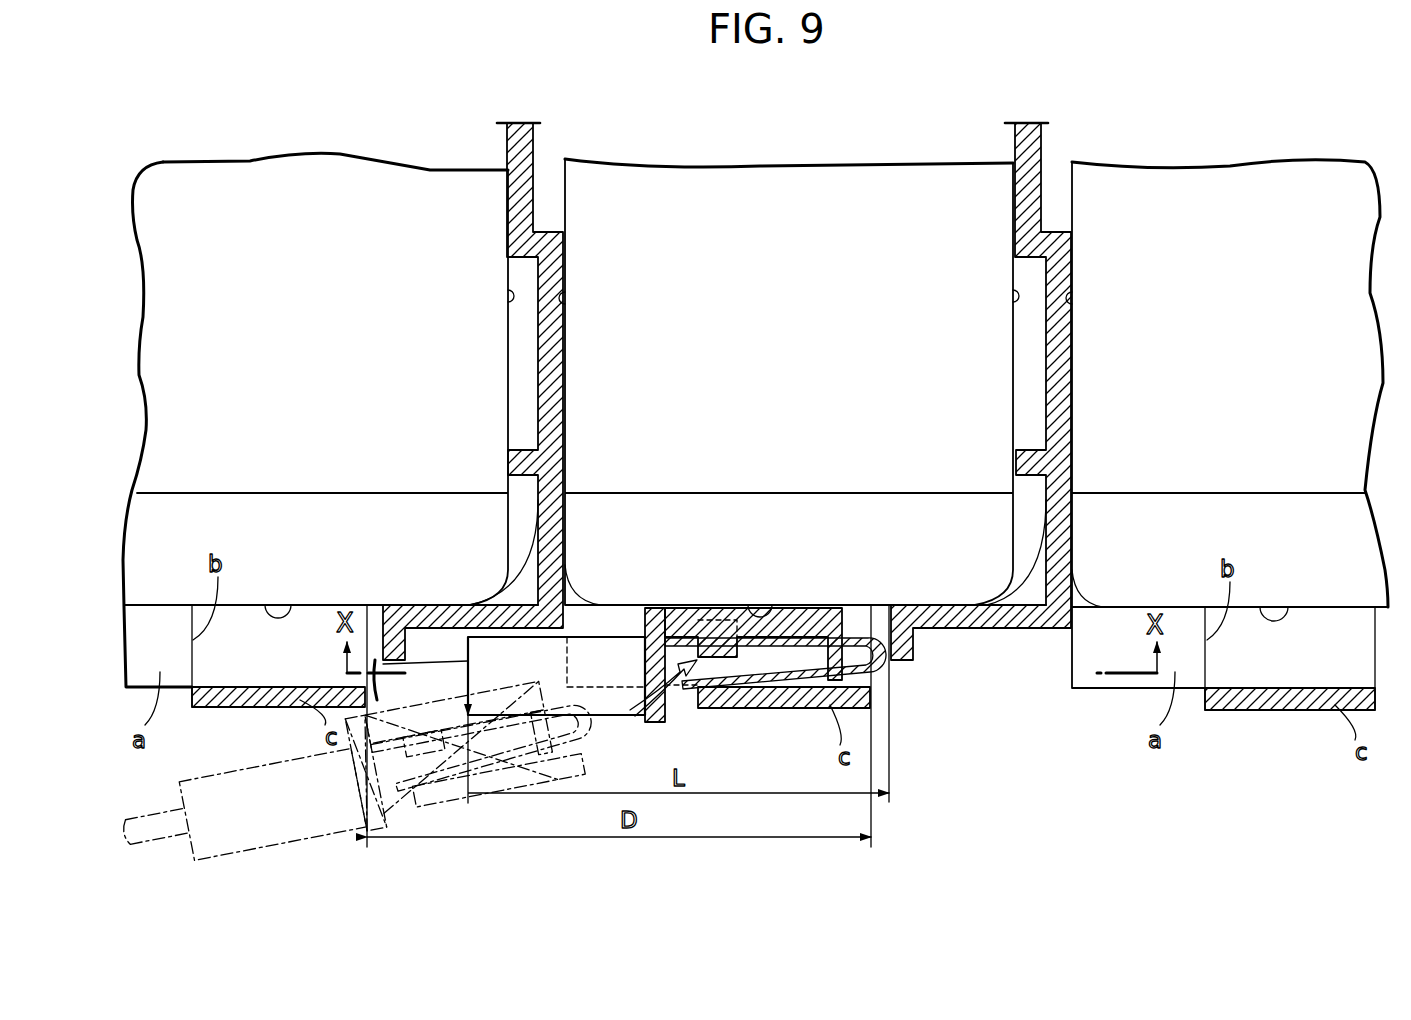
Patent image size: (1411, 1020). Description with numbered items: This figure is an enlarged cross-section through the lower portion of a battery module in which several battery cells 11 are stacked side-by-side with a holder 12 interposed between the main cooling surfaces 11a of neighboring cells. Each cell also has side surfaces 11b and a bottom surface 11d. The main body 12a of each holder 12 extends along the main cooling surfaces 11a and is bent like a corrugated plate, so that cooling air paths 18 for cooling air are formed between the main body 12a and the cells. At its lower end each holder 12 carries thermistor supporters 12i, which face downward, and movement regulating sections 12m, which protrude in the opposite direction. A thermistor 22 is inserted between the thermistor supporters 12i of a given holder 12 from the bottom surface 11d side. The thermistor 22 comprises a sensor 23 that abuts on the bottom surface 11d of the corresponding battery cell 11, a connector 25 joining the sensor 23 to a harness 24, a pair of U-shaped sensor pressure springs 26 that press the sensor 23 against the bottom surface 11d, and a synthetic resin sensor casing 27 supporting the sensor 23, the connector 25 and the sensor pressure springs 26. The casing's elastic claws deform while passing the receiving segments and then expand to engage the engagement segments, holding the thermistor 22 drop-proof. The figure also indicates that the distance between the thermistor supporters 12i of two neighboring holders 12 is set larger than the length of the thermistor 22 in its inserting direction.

The battery cell 11 is at (385, 158).
The main cooling surface 11a is at (508, 298).
The side surface 11b is at (330, 340).
The bottom surface 11d is at (270, 603).
The holder 12 is at (540, 150).
The main body 12a is at (520, 212).
The thermistor supporter 12i is at (215, 712).
The movement regulating section 12m is at (400, 603).
The cooling air path 18 is at (520, 372).
The thermistor 22 is at (413, 808).
The sensor 23 is at (828, 607).
The harness 24 is at (440, 680).
The connector 25 is at (588, 637).
The sensor pressure spring 26 is at (858, 637).
The sensor casing 27 is at (693, 608).